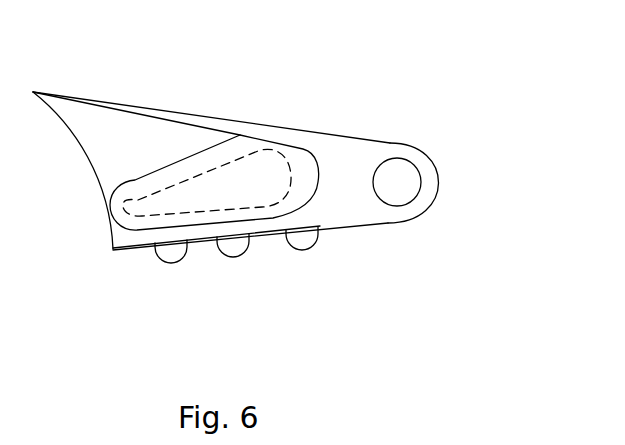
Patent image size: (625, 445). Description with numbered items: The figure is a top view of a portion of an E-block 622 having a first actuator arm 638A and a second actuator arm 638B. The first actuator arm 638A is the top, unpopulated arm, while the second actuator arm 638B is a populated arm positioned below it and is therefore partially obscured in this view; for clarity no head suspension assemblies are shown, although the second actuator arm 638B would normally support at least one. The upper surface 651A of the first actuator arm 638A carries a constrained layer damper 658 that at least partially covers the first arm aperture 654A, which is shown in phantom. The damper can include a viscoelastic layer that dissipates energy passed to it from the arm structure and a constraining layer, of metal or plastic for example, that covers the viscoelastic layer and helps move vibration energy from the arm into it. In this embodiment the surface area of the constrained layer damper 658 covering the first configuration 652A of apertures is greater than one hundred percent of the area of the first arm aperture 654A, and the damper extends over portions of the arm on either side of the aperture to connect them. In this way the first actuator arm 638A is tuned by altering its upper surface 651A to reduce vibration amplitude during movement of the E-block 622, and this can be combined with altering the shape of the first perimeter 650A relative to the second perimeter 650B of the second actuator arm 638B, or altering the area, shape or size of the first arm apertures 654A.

The E-block 622 is at (176, 93).
The first actuator arm 638A is at (320, 155).
The second actuator arm 638B is at (368, 149).
The first perimeter 650A is at (283, 141).
The second perimeter 650B is at (240, 126).
The upper surface 651A is at (92, 123).
The first configuration 652A is at (178, 201).
The first arm aperture 654A is at (240, 193).
The constrained layer damper 658 is at (307, 187).